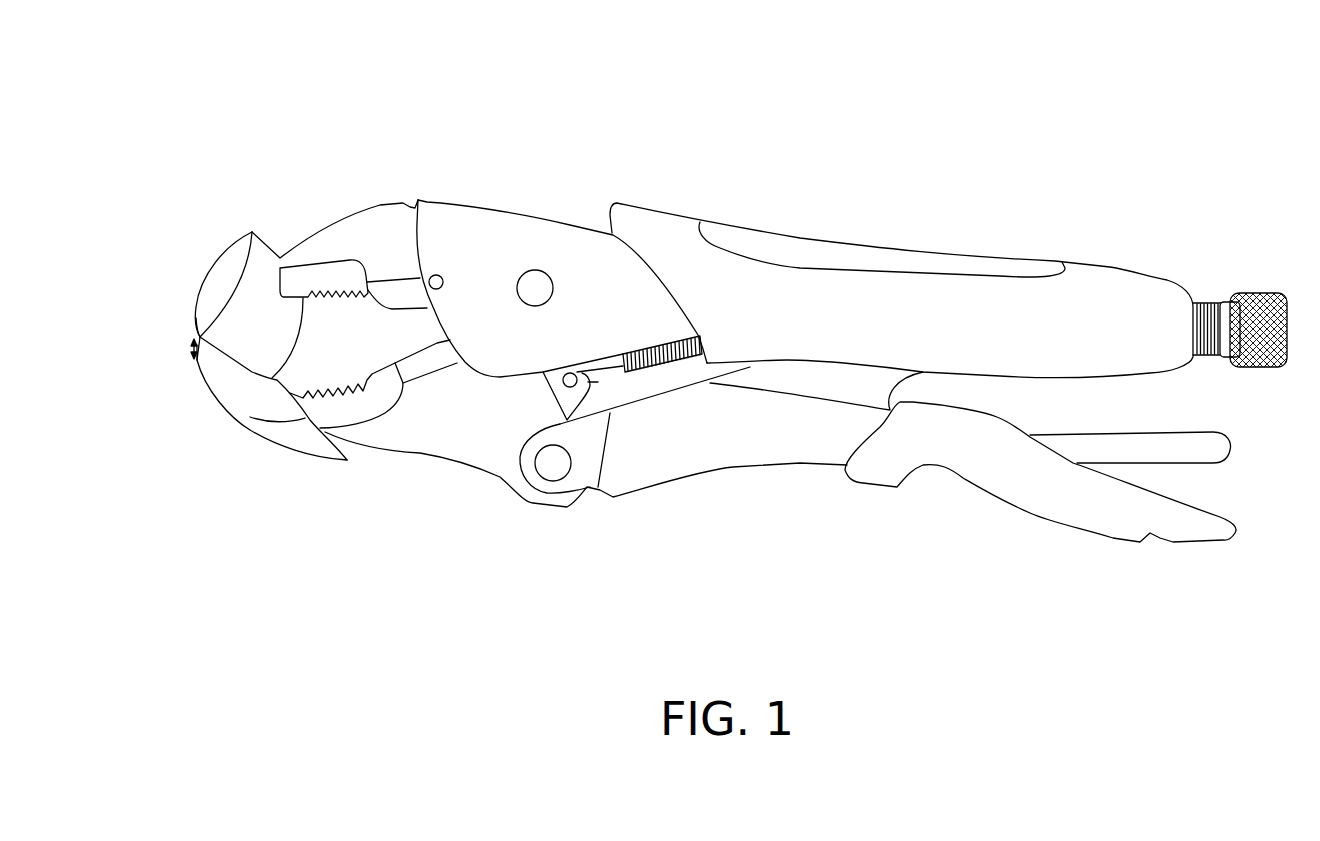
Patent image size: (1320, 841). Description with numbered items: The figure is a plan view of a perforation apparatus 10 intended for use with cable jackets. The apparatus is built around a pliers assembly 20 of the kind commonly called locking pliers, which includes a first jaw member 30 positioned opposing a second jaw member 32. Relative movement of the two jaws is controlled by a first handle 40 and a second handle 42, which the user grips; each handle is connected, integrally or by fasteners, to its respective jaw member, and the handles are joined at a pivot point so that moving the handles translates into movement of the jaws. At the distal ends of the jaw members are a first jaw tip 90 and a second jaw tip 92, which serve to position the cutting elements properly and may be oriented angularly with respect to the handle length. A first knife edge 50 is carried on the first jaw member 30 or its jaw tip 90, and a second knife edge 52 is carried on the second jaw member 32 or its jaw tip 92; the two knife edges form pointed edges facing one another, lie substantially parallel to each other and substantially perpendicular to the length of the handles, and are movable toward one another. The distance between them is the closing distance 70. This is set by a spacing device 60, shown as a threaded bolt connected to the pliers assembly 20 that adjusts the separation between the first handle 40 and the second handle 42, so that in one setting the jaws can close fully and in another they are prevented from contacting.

The perforation apparatus 10 is at (735, 126).
The pliers assembly 20 is at (583, 290).
The first jaw member 30 is at (380, 220).
The second jaw member 32 is at (373, 432).
The first handle 40 is at (965, 250).
The second handle 42 is at (960, 482).
The first knife edge 50 is at (200, 337).
The second knife edge 52 is at (199, 360).
The spacing device 60 is at (1260, 288).
The closing distance 70 is at (188, 349).
The first jaw tip 90 is at (222, 272).
The second jaw tip 92 is at (242, 390).